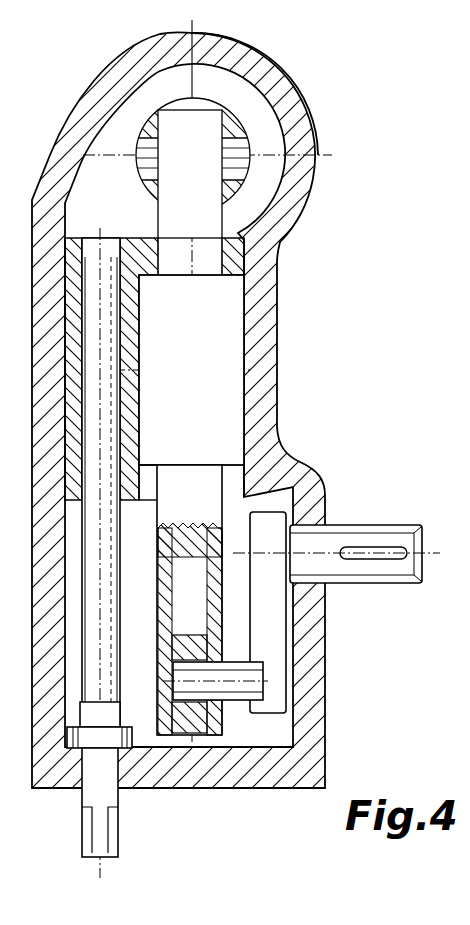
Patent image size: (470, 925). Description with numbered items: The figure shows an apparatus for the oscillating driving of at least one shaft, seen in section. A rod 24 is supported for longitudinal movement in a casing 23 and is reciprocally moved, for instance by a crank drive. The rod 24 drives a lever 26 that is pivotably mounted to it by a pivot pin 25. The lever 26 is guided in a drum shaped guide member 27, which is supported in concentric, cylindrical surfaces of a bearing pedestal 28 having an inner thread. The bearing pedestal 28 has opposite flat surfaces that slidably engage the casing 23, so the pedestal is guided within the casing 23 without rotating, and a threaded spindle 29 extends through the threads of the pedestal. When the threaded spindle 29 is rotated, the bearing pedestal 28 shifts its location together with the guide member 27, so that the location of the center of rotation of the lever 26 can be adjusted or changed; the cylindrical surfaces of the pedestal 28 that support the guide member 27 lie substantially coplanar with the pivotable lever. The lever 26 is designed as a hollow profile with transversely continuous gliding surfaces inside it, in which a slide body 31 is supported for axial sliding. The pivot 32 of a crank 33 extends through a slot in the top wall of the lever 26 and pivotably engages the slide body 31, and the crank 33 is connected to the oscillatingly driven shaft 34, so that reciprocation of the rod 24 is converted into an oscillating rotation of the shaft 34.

The casing 23 is at (290, 105).
The rod 24 is at (287, 67).
The pivot pin 25 is at (253, 143).
The lever 26 is at (205, 312).
The drum shaped guide member 27 is at (230, 352).
The bearing pedestal 28 is at (155, 493).
The threaded spindle 29 is at (110, 680).
The slide body 31 is at (200, 735).
The pivot 32 is at (230, 697).
The crank 33 is at (268, 622).
The oscillatingly driven shaft 34 is at (398, 538).